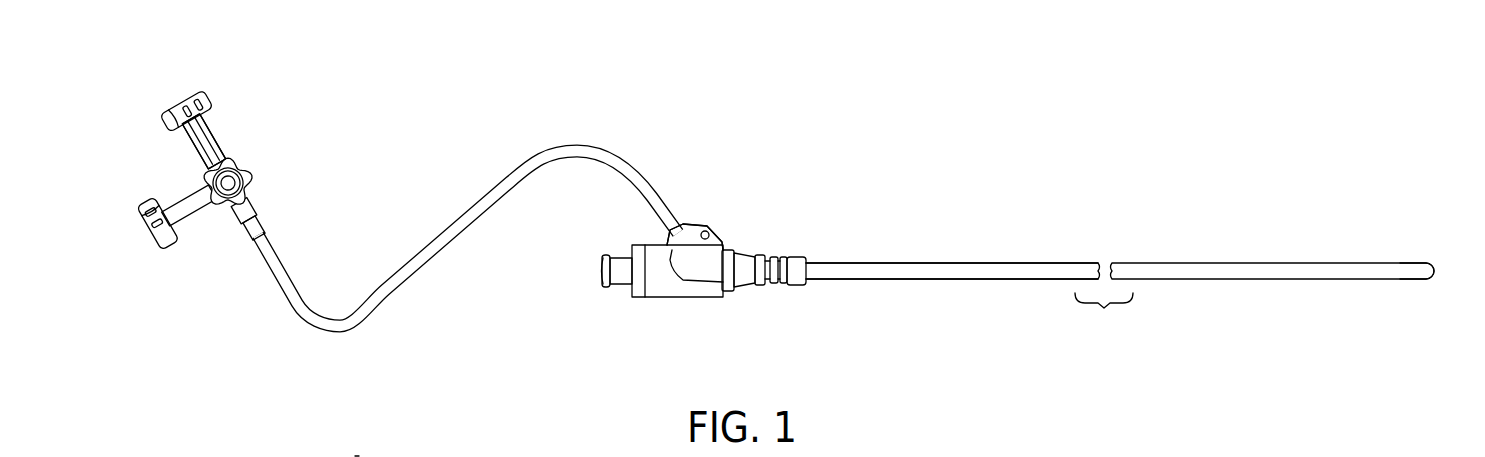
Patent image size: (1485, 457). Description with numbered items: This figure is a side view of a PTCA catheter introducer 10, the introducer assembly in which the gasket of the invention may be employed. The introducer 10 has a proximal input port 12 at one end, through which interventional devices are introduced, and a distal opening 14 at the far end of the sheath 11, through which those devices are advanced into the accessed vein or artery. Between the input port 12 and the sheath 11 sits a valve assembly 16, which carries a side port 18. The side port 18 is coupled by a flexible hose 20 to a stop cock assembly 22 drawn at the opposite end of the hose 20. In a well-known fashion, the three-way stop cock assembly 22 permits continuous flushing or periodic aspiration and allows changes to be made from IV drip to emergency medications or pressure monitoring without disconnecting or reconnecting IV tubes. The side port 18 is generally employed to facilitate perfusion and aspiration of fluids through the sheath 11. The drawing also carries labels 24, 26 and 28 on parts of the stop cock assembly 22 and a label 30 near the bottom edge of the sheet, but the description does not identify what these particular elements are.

The PTCA catheter introducer 10 is at (893, 236).
The sheath 11 is at (997, 281).
The proximal input port 12 is at (603, 282).
The distal opening 14 is at (1433, 270).
The valve assembly 16 is at (715, 302).
The side port 18 is at (684, 212).
The hose 20 is at (645, 173).
The stop cock assembly 22 is at (270, 183).
The stopcock arm 24 is at (222, 153).
The cap 26 is at (191, 82).
The cap 28 is at (172, 248).
The element 30 is at (287, 446).